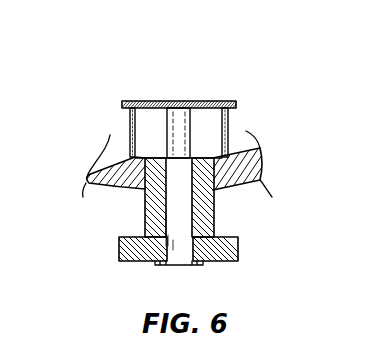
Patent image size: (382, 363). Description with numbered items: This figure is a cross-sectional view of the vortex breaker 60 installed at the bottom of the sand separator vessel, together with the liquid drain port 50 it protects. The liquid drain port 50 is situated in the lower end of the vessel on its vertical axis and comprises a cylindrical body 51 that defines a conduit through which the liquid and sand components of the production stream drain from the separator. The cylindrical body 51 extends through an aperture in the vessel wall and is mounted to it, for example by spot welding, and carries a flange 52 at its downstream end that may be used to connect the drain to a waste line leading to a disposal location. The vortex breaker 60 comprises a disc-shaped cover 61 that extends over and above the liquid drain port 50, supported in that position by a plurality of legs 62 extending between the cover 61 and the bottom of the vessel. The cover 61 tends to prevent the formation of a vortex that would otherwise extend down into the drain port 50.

The liquid drain port 50 is at (249, 219).
The cylindrical body 51 is at (145, 209).
The flange 52 is at (132, 262).
The vortex breaker 60 is at (182, 90).
The disc-shaped cover 61 is at (133, 101).
The legs 62 is at (180, 110).